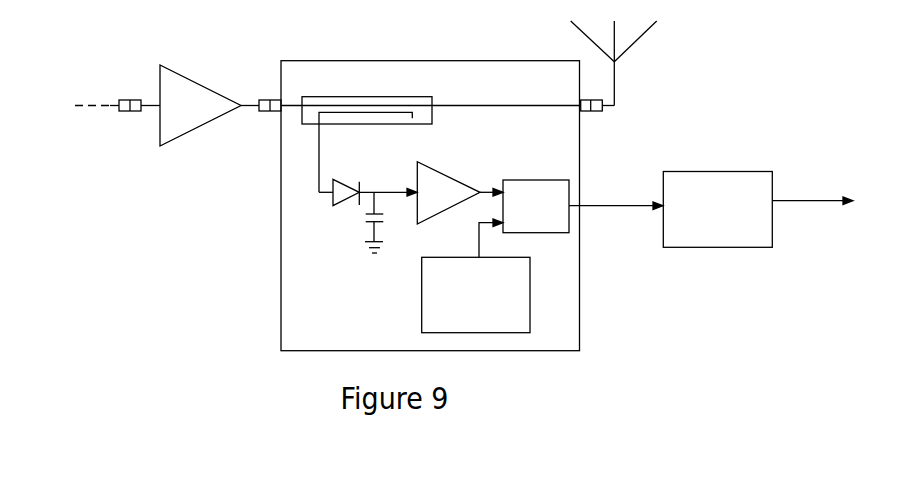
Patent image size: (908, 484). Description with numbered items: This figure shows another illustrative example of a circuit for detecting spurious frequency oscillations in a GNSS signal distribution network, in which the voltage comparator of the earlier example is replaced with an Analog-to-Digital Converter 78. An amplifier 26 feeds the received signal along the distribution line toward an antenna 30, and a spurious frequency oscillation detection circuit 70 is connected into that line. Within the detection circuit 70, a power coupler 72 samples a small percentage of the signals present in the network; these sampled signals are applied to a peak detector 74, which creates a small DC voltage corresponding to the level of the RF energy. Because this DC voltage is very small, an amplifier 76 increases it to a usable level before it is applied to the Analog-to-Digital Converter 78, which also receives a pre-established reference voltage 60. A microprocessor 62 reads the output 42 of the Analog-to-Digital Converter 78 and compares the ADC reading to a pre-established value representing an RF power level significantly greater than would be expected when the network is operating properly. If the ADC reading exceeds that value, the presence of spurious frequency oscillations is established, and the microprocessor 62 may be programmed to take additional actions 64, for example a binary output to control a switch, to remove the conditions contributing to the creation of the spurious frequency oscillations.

The power amplifier 26 is at (195, 137).
The spurious frequency oscillation detection circuit 70 is at (430, 188).
The directional coupler 72 is at (367, 127).
The detector diode 74 is at (368, 200).
The amplifier 76 is at (460, 182).
The Analog-to-Digital Converter 78 is at (539, 189).
The reference voltage 60 is at (499, 276).
The output 42 is at (602, 214).
The microprocessor 62 is at (717, 193).
The additional actions 64 is at (790, 209).
The antenna 30 is at (643, 50).